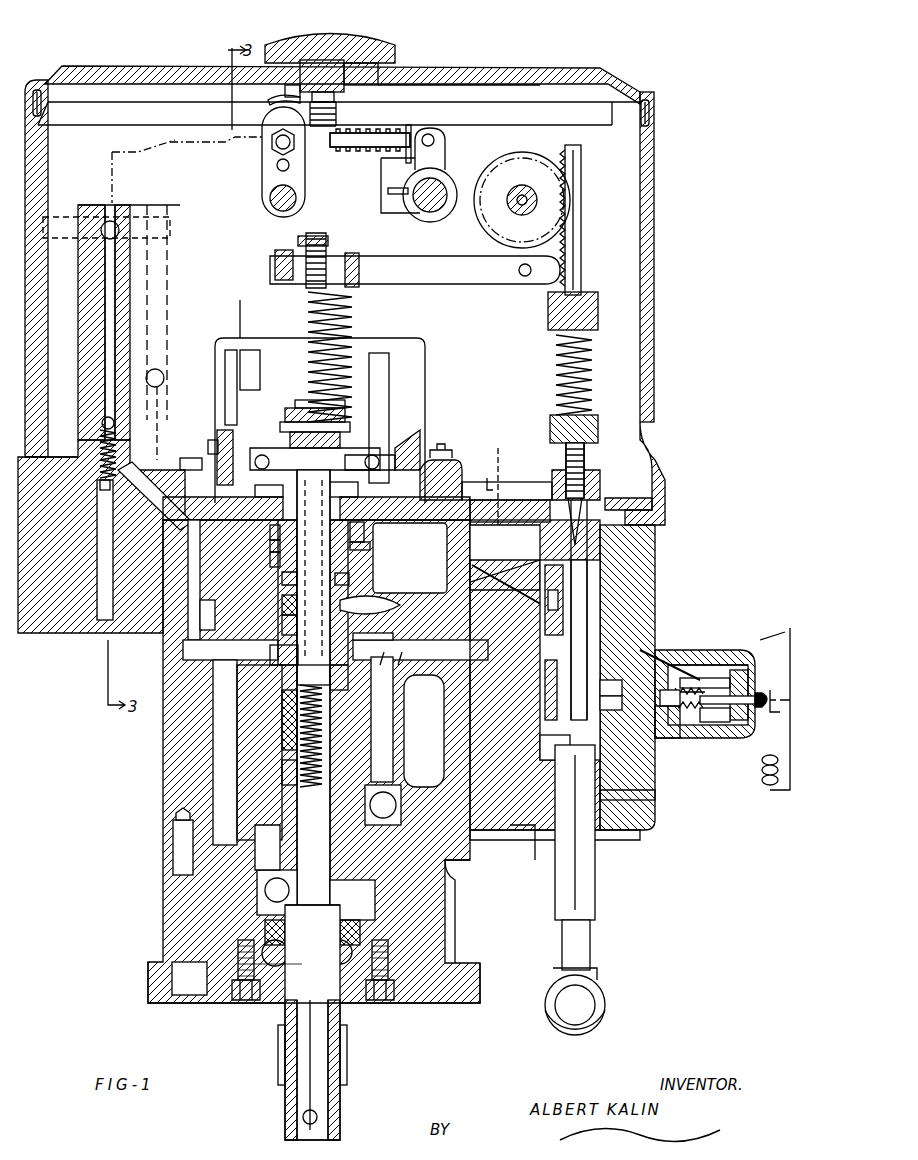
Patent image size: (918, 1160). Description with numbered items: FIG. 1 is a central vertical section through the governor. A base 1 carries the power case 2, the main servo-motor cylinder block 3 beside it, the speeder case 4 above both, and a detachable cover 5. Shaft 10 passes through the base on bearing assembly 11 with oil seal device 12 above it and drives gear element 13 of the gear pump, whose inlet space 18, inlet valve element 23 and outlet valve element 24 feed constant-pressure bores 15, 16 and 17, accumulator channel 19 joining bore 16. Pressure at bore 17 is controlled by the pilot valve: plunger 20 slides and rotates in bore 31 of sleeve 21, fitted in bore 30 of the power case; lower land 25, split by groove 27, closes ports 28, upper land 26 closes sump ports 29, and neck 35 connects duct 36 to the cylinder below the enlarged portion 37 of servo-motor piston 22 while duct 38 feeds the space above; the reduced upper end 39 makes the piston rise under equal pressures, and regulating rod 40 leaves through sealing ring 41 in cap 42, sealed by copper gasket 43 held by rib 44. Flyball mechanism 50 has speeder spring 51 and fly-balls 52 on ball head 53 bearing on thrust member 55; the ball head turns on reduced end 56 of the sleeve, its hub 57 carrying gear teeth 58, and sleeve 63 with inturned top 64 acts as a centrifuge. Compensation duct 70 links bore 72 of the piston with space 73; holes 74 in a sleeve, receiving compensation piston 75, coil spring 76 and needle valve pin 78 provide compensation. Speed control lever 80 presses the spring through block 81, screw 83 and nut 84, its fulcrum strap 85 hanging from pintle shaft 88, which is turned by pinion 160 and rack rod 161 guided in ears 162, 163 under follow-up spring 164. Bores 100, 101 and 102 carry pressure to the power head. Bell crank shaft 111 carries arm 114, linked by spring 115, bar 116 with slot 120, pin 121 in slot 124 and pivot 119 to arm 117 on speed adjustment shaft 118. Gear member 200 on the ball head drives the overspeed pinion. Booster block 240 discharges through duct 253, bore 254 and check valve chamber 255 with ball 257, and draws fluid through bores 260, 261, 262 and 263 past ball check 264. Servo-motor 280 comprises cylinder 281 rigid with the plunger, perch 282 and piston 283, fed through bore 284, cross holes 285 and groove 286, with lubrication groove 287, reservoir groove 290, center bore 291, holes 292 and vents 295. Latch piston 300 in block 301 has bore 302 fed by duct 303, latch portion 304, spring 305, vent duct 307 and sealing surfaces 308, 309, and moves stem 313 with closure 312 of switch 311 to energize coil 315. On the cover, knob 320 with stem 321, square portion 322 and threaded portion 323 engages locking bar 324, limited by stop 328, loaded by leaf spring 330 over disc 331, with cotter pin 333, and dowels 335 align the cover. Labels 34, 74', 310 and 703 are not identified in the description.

The base 1 is at (445, 930).
The power case 2 is at (163, 762).
The main servo-motor cylinder block 3 is at (655, 570).
The speeder case 4 is at (654, 210).
The detachable cover 5 is at (615, 80).
The shaft 10 is at (312, 1022).
The bearing assembly 11 is at (342, 1000).
The oil seal device 12 is at (262, 918).
The gear element 13 is at (268, 870).
The bore 15 is at (381, 719).
The bore 16 is at (225, 752).
The bore 17 is at (335, 652).
The space 18 is at (258, 890).
The cross channel 19 is at (220, 803).
The pilot valve plunger 20 is at (285, 588).
The pilot valve sleeve 21 is at (350, 562).
The servo-motor piston 22 is at (567, 660).
The inlet valve element 23 is at (432, 890).
The outlet valve element 24 is at (398, 805).
The lower land 25 is at (259, 752).
The upper land 26 is at (282, 578).
The groove 27 is at (387, 660).
The ports 28 is at (270, 657).
The ports 29 is at (352, 578).
The central vertical cylindrical bore 30 is at (282, 605).
The cylindrical axial bore 31 is at (272, 720).
The collar 34 is at (271, 490).
The neck portion 35 is at (372, 605).
The duct 36 is at (546, 750).
The enlarged portion 37 is at (575, 692).
The duct 38 is at (556, 680).
The reduced upper end 39 is at (548, 609).
The regulating rod 40 is at (560, 875).
The sealing ring 41 is at (595, 852).
The lower cylinder closure cap 42 is at (640, 830).
The copper gasket 43 is at (655, 805).
The rib 44 is at (520, 842).
The flyball mechanism 50 is at (398, 462).
The speeder spring 51 is at (340, 322).
The fly-balls 52 is at (240, 345).
The rotary ball head 53 is at (462, 470).
The thrust member 55 is at (420, 440).
The reduced upper end portion 56 is at (270, 535).
The depending hub portion 57 is at (270, 548).
The gear teeth 58 is at (270, 562).
The sleeve 63 is at (215, 370).
The inturned top 64 is at (222, 336).
The compensation fluid duct 70 is at (542, 570).
The axial bore 72 is at (577, 609).
The space 73 is at (282, 775).
The lateral holes 74 is at (510, 511).
The threaded stem 74' is at (598, 471).
The receiving compensation piston 75 is at (313, 726).
The coil spring 76 is at (300, 725).
The adjustable needle valve pin 78 is at (598, 420).
The speed control lever 80 is at (275, 266).
The block 81 is at (340, 285).
The adjustable screw 83 is at (330, 238).
The nut 84 is at (298, 240).
The strap 85 is at (530, 262).
The horizontal pintle shaft 88 is at (522, 200).
The vertical bore 100 is at (222, 613).
The diagonal bore 101 is at (155, 496).
The vertical bore 102 is at (85, 470).
The horizontal shaft 111 is at (265, 205).
The upstanding arm 114 is at (262, 125).
The spring 115 is at (370, 150).
The bar 116 is at (346, 170).
The arm 117 is at (416, 165).
The speed adjustment shaft 118 is at (440, 205).
The pivot pin 119 is at (435, 142).
The slot 120 is at (352, 150).
The pin 121 is at (270, 146).
The slot 124 is at (275, 167).
The pinion 160 is at (565, 160).
The rod 161 is at (582, 160).
The ear formation 162 is at (548, 318).
The ear formation 163 is at (530, 482).
The follow-up spring 164 is at (592, 385).
The gear member 200 is at (208, 443).
The block 240 is at (101, 536).
The duct 253 is at (92, 215).
The vertical bore 254 is at (105, 330).
The check valve chamber 255 is at (100, 450).
The spring pressed ball 257 is at (102, 420).
The bore 260 is at (192, 457).
The bore 261 is at (165, 408).
The bore 262 is at (170, 255).
The bore 263 is at (125, 200).
The gravity seated ball check 264 is at (160, 370).
The servo-motor 280 is at (290, 412).
The servo-motor cylinder 281 is at (345, 425).
The lower speeder spring retainer 282 is at (380, 440).
The piston 283 is at (300, 400).
The central bore 284 is at (282, 625).
The cross holes 285 is at (373, 642).
The upper groove 286 is at (365, 535).
The reservoir groove 287 is at (397, 547).
The reservoir groove 290 is at (223, 506).
The center bore 291 is at (343, 488).
The radial holes 292 is at (405, 508).
The leak off vents 295 is at (282, 428).
The piston 300 is at (700, 650).
The cylinder block 301 is at (750, 650).
The central bore 302 is at (700, 725).
The duct 303 is at (685, 660).
The reduced portion 304 is at (614, 686).
The spring 305 is at (672, 738).
The duct 307 is at (705, 678).
The surface 308 is at (688, 738).
The surface 309 is at (715, 722).
The seat 310 is at (618, 705).
The switch 311 is at (772, 712).
The closure member 312 is at (762, 694).
The stem 313 is at (738, 670).
The circuit breaker closing coil 315 is at (762, 785).
The knurled knob 320 is at (330, 49).
The circular stem 321 is at (360, 63).
The non-circular portion 322 is at (345, 66).
The screw-threaded portion 323 is at (268, 100).
The locking bar 324 is at (336, 80).
The stop 328 is at (340, 100).
The bowed leaf spring 330 is at (450, 82).
The metal disc 331 is at (290, 85).
The cotter pin 333 is at (370, 130).
The dowels 335 is at (42, 95).
The section line 703 is at (503, 482).